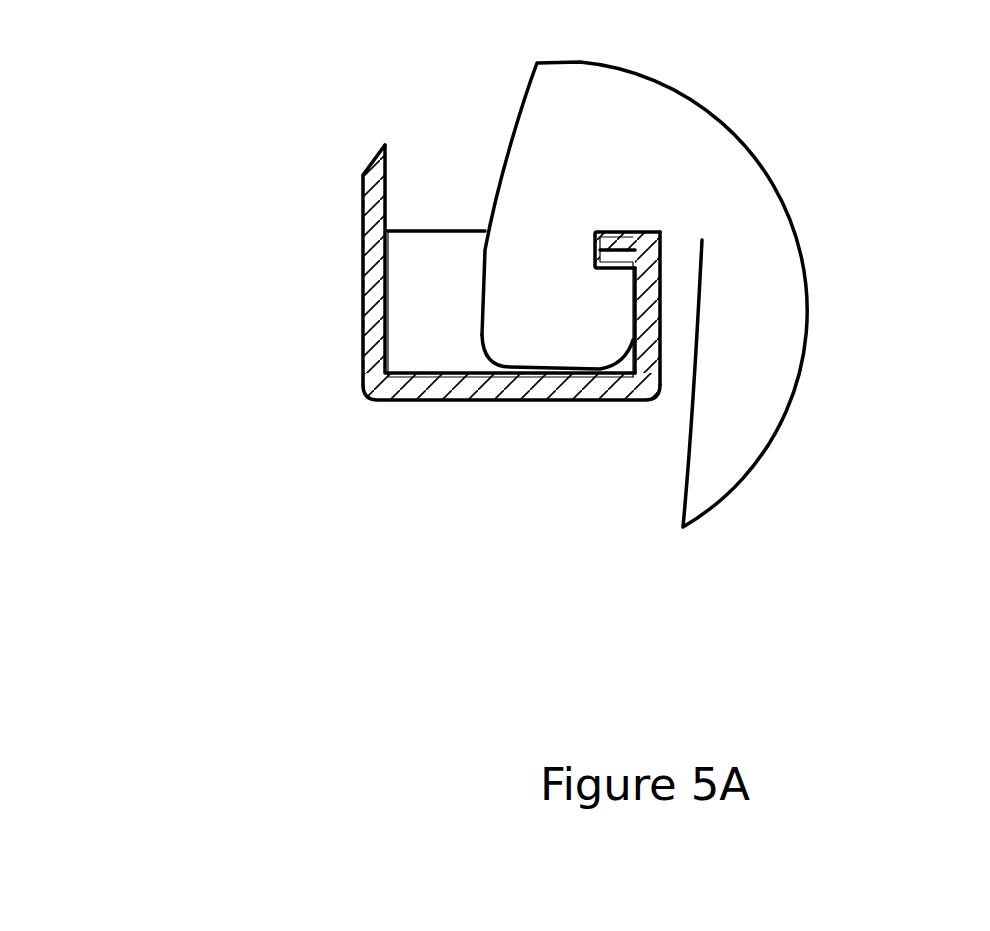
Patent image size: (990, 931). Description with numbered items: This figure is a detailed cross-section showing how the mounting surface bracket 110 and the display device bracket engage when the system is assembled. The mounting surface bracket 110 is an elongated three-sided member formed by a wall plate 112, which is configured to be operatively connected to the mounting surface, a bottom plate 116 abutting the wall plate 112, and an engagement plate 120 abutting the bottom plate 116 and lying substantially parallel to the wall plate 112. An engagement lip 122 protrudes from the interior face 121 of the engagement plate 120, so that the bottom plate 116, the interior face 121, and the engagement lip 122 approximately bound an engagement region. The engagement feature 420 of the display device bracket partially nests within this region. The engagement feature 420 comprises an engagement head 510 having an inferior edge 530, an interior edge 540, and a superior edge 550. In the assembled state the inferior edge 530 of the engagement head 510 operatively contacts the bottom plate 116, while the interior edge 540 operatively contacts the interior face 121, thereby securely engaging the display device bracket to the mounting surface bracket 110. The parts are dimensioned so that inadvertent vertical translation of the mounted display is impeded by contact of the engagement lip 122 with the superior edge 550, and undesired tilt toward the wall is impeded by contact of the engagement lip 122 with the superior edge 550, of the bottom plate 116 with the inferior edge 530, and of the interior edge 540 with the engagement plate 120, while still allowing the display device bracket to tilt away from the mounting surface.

The mounting surface bracket 110 is at (368, 317).
The wall plate 112 is at (373, 197).
The bottom plate 116 is at (517, 391).
The engagement plate 120 is at (648, 337).
The interior face 121 is at (637, 302).
The engagement lip 122 is at (645, 240).
The engagement feature 420 is at (690, 150).
The engagement head 510 is at (530, 303).
The inferior edge 530 is at (480, 365).
The interior edge 540 is at (652, 300).
The superior edge 550 is at (633, 270).